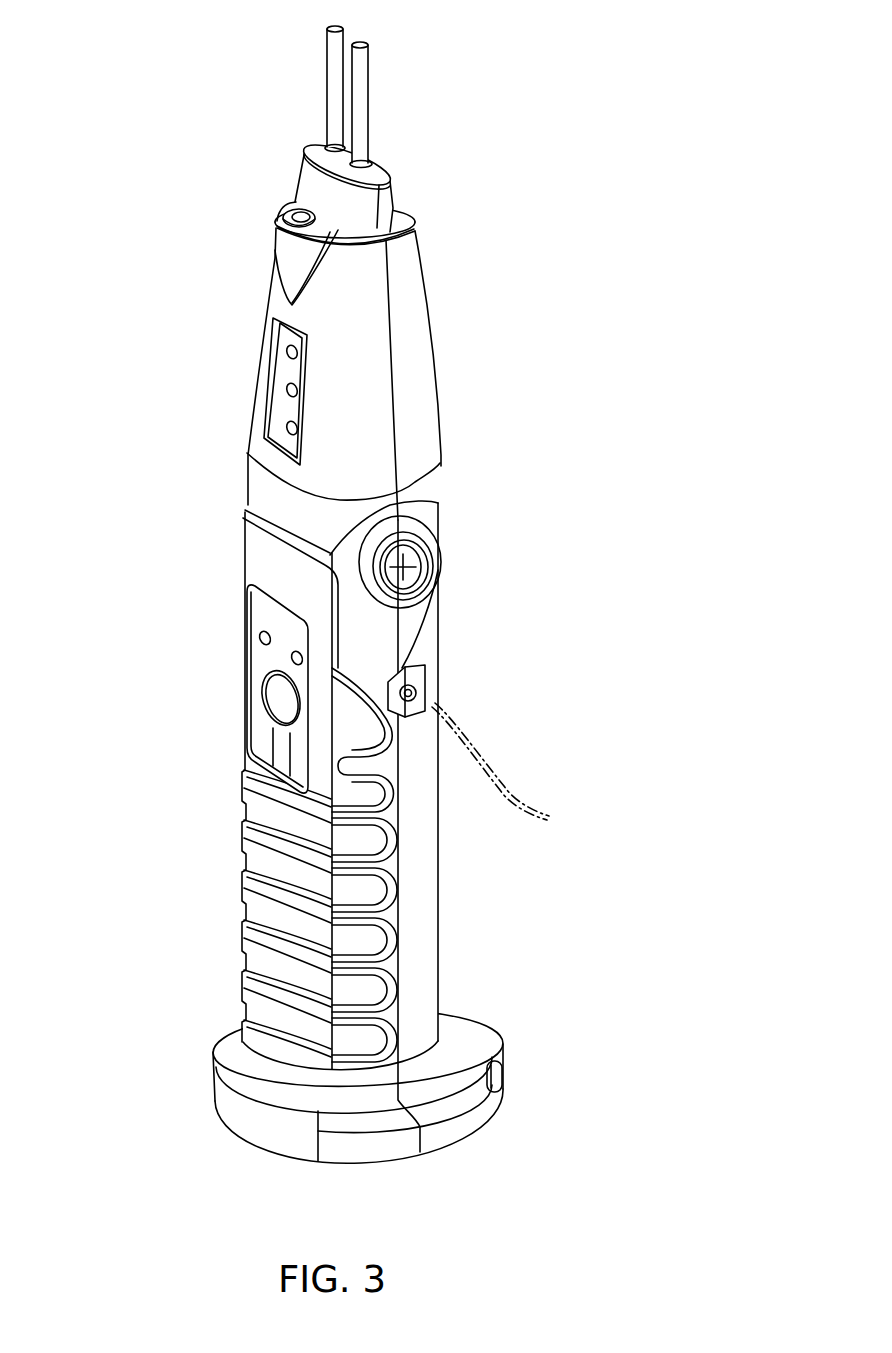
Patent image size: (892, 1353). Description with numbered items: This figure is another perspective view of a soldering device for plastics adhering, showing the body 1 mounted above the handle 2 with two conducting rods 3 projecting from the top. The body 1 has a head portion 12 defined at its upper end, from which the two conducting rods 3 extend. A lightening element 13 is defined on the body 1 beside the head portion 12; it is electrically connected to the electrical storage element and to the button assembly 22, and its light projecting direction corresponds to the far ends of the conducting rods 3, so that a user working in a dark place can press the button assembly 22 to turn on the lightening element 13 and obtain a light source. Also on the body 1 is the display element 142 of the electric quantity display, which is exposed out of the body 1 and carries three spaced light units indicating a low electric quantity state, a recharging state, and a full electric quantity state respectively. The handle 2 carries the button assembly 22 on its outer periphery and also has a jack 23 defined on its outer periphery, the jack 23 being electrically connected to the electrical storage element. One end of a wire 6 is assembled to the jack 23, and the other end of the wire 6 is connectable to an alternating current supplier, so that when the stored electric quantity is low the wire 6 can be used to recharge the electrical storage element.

The body 1 is at (480, 367).
The handle 2 is at (495, 917).
The conducting rods 3 is at (357, 97).
The head portion 12 is at (387, 212).
The lightening element 13 is at (281, 207).
The display element 142 is at (282, 372).
The button assembly 22 is at (277, 698).
The jack 23 is at (427, 674).
The wire 6 is at (510, 793).